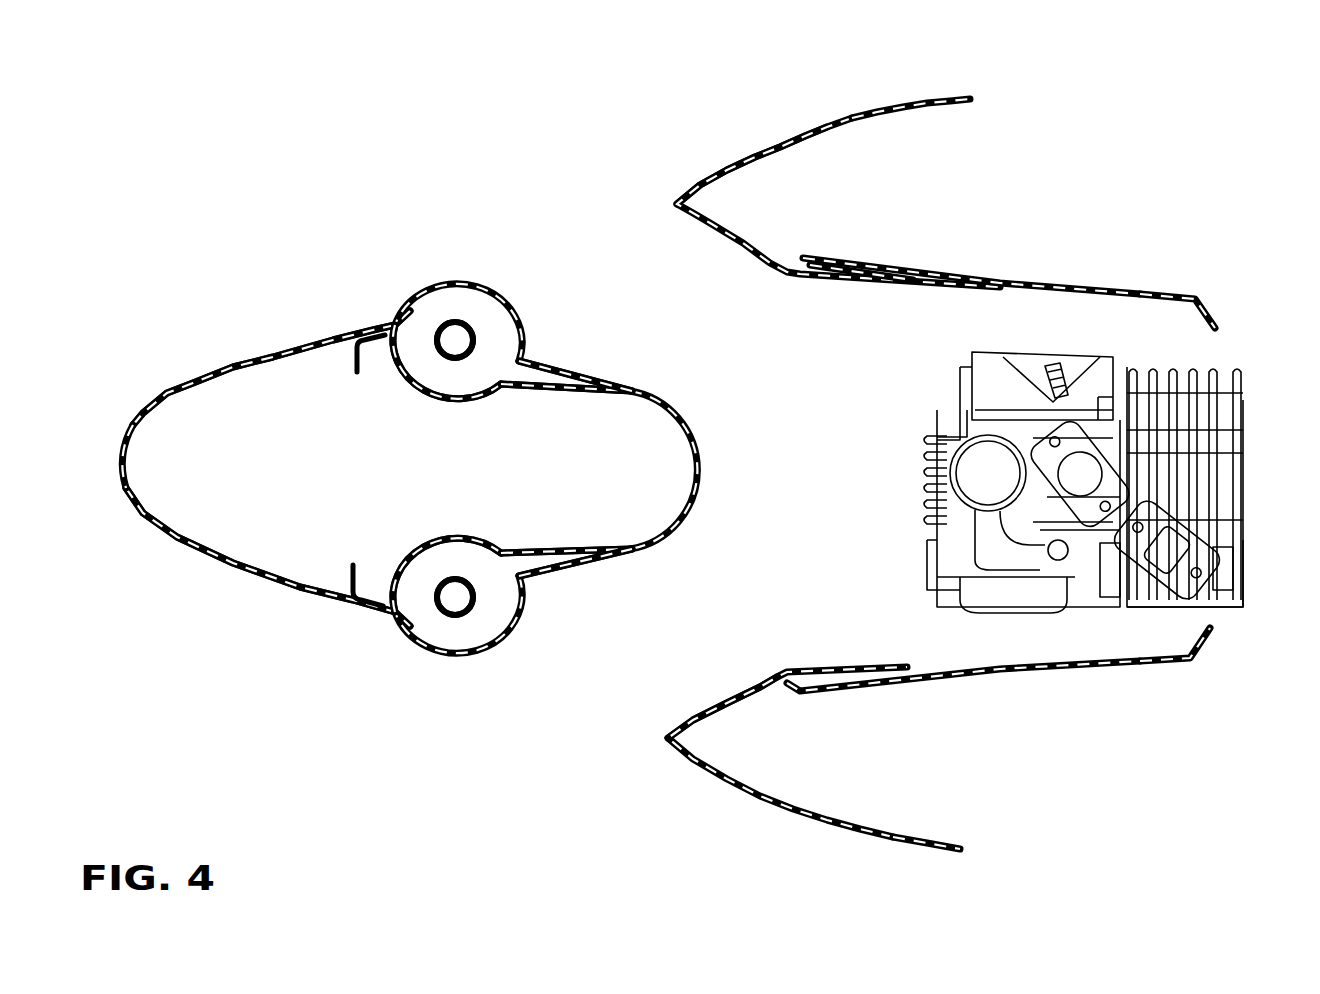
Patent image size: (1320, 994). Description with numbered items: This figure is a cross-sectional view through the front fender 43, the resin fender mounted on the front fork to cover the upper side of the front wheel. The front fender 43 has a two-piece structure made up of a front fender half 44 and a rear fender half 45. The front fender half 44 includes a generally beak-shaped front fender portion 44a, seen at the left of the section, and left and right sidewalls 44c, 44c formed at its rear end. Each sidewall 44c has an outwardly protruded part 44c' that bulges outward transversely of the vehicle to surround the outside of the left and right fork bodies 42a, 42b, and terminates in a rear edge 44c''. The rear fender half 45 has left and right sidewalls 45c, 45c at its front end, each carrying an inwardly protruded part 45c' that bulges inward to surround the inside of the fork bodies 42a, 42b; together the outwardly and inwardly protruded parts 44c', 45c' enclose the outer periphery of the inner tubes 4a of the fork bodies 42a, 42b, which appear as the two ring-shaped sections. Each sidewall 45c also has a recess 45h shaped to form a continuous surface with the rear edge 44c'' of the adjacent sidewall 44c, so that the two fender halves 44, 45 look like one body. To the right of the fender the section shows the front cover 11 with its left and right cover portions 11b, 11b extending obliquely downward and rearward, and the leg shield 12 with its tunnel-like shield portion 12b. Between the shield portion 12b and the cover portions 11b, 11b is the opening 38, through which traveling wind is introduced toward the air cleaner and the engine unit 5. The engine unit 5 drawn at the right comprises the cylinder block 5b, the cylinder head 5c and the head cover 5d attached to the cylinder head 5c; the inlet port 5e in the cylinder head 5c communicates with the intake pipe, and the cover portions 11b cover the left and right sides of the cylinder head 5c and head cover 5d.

The front fender 43 is at (194, 337).
The front fender half 44 is at (272, 354).
The front fender portion 44a is at (147, 527).
The sidewall of front fender half 44c is at (354, 469).
The outwardly protruded part 44c' is at (487, 471).
The rear edge of sidewall 44c'' is at (668, 459).
The rear fender half 45 is at (530, 399).
The sidewall of rear fender half 45c is at (556, 468).
The inwardly protruded part 45c' is at (440, 468).
The recess 45h is at (645, 387).
The inner tube 4a is at (445, 320).
The left fork body 42a is at (440, 622).
The right fork body 42b is at (470, 308).
The opening 38 is at (754, 331).
The front cover 11 is at (786, 138).
The cover portion 11b is at (876, 114).
The leg shield 12 is at (1106, 278).
The shield portion 12b is at (1176, 295).
The engine unit 5 is at (1243, 357).
The cylinder head 5c is at (1100, 351).
The head cover 5d is at (935, 525).
The inlet port 5e is at (1058, 470).
The cylinder block 5b is at (1222, 612).